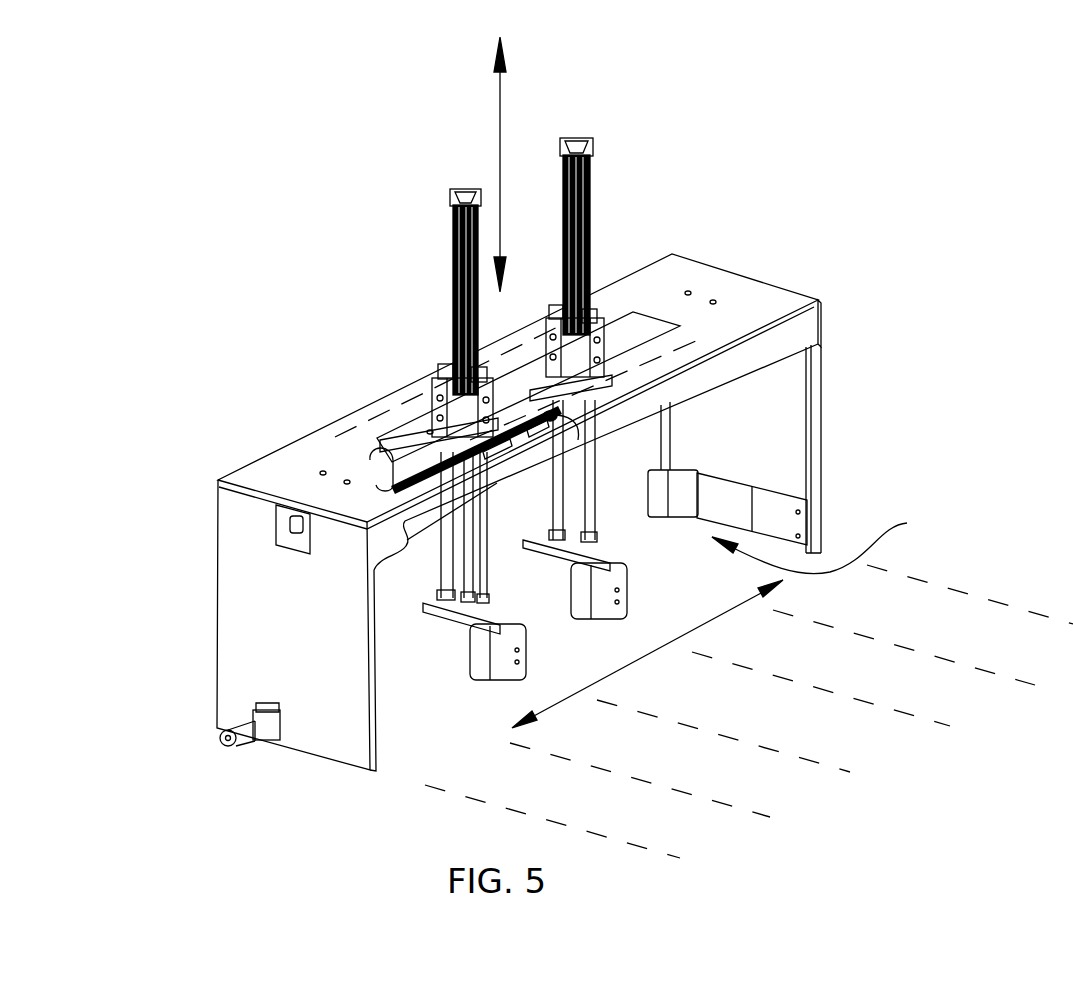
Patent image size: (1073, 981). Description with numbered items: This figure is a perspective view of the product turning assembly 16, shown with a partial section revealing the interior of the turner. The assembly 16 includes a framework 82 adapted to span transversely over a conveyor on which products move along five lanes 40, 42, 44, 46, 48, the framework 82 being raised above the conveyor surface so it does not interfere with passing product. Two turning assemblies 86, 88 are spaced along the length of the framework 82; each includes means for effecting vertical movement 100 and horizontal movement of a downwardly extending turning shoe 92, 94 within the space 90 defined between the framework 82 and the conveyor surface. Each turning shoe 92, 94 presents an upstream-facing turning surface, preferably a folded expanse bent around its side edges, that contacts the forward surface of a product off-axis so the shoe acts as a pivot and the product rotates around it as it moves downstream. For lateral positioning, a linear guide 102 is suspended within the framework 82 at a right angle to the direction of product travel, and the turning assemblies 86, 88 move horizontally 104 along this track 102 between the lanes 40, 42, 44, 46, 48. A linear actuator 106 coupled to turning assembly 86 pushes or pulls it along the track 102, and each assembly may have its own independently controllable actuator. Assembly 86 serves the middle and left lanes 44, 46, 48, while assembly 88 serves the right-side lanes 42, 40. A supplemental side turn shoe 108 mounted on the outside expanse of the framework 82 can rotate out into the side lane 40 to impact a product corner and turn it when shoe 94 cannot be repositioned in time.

The product turning assembly 16 is at (768, 147).
The framework 82 is at (777, 280).
The turning assembly 86 is at (437, 318).
The turning assembly 88 is at (638, 207).
The space 90 is at (826, 542).
The turning shoe 92 is at (483, 657).
The turning shoe 94 is at (622, 590).
The vertical movement arrow 100 is at (500, 137).
The linear guide 102 is at (478, 473).
The horizontal movement 104 is at (643, 658).
The linear actuator 106 is at (369, 450).
The side turn shoe 108 is at (767, 517).
The lane 40 is at (923, 625).
The lane 42 is at (821, 689).
The lane 44 is at (723, 736).
The lane 46 is at (640, 780).
The lane 48 is at (552, 821).